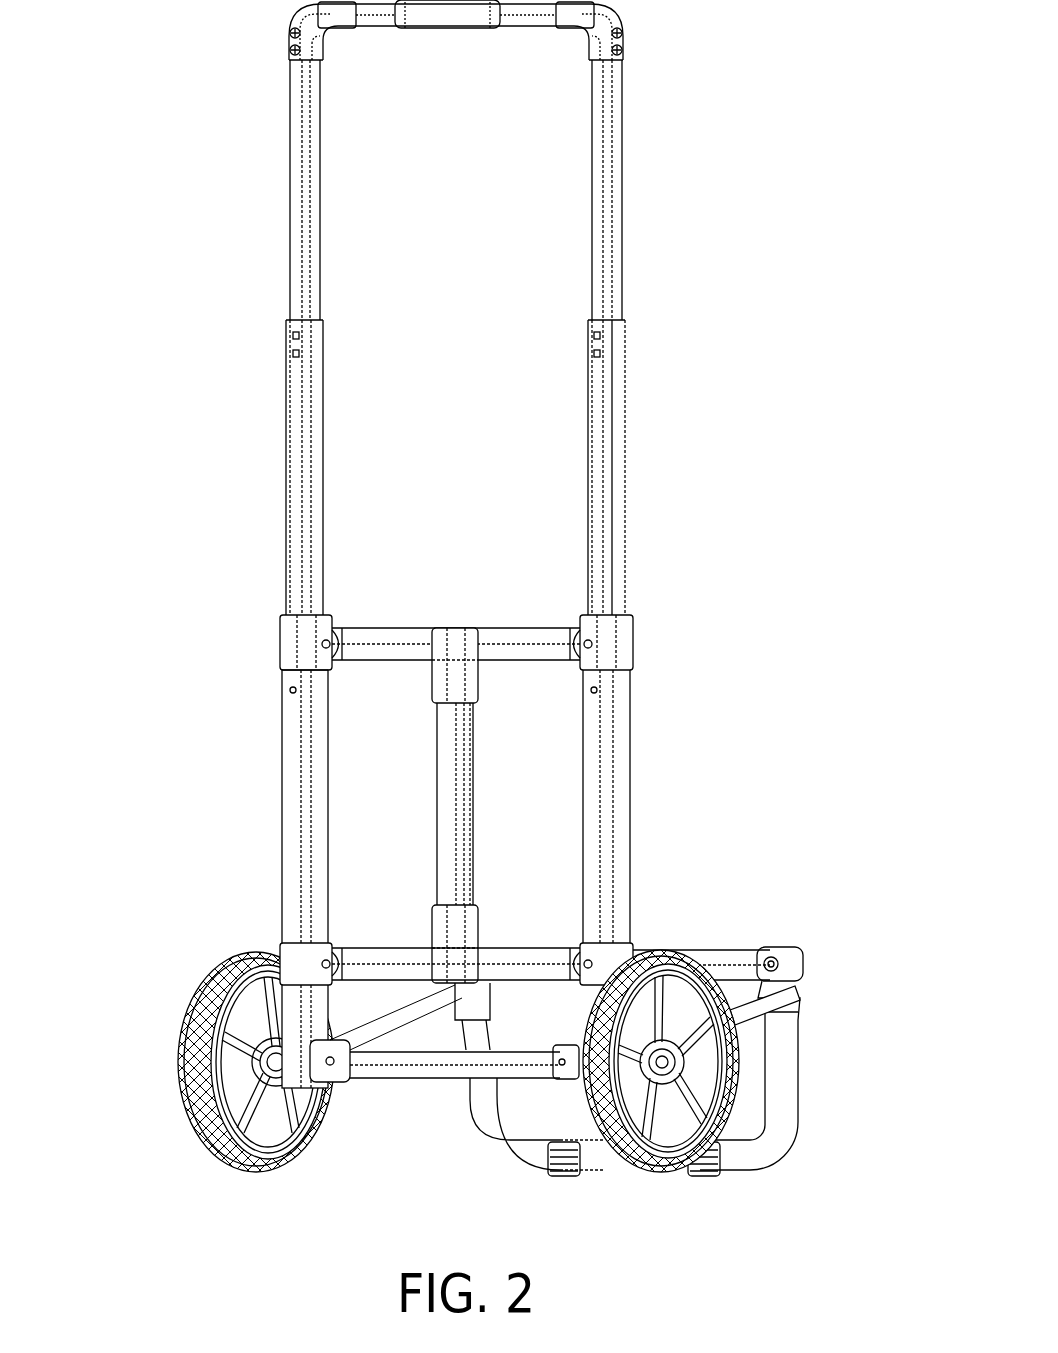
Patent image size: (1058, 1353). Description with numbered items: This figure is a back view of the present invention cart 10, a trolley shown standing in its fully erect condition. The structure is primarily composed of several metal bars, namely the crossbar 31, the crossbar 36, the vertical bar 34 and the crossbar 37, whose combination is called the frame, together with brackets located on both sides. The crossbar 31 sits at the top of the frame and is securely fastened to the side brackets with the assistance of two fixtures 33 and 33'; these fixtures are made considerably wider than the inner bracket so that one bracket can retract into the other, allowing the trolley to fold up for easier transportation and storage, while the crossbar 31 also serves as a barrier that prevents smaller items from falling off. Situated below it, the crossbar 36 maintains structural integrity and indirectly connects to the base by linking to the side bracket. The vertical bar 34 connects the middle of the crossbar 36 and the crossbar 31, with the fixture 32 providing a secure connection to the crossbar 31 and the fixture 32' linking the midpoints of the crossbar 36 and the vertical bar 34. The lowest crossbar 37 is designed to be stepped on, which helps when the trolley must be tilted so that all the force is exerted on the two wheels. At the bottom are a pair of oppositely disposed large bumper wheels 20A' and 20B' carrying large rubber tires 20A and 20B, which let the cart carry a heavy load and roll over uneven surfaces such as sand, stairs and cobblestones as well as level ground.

The cart 10 is at (268, 320).
The crossbar 31 is at (398, 638).
The fixture 32 is at (587, 585).
The fixture 32' is at (645, 897).
The fixture 33 is at (679, 620).
The fixture 33' is at (261, 626).
The vertical bar 34 is at (473, 824).
The crossbar 36 is at (377, 962).
The crossbar 37 is at (410, 1062).
The rubber tire 20A is at (275, 1062).
The bumper wheel 20A' is at (202, 1062).
The rubber tire 20B is at (658, 1061).
The bumper wheel 20B' is at (773, 1053).